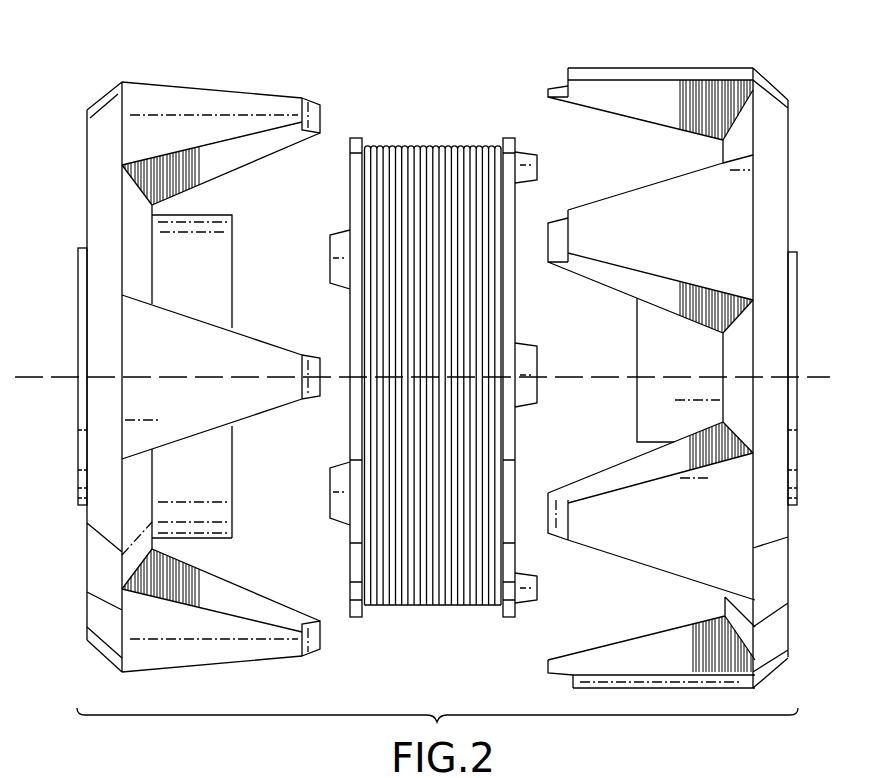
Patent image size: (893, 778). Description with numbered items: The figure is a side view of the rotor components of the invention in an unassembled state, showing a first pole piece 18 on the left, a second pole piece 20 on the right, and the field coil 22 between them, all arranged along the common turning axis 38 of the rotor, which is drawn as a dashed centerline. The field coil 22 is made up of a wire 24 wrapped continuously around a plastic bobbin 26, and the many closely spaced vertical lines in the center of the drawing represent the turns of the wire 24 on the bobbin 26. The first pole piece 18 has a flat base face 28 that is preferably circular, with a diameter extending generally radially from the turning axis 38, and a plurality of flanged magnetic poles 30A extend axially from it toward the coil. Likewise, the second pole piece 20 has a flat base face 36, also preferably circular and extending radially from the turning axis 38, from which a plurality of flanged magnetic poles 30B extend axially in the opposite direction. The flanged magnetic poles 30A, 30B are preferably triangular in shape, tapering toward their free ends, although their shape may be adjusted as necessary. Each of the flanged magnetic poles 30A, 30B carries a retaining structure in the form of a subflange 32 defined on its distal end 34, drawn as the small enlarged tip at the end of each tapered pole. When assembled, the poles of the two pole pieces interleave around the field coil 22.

The first pole piece 18 is at (100, 660).
The second pole piece 20 is at (772, 92).
The field coil 22 is at (459, 362).
The wire 24 is at (487, 605).
The plastic bobbin 26 is at (513, 318).
The flat base face 28 is at (85, 172).
The flanged magnetic poles 30A is at (267, 370).
The flanged magnetic poles 30B is at (610, 528).
The subflange 32 is at (322, 112).
The distal end 34 is at (310, 90).
The flat base face 36 is at (800, 574).
The turning axis 38 is at (27, 382).